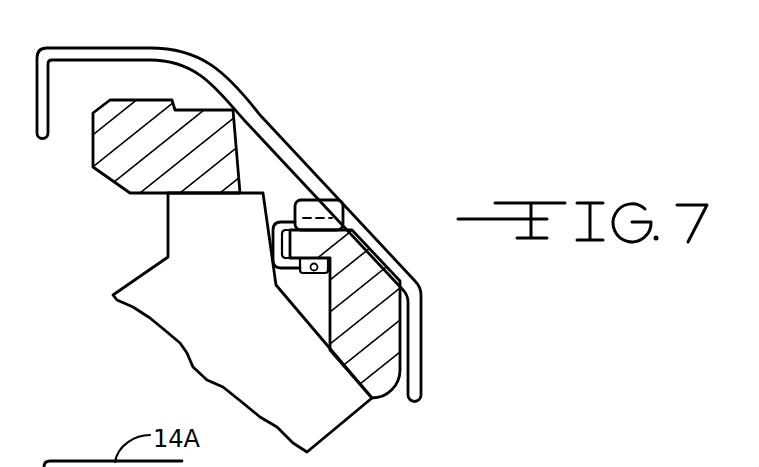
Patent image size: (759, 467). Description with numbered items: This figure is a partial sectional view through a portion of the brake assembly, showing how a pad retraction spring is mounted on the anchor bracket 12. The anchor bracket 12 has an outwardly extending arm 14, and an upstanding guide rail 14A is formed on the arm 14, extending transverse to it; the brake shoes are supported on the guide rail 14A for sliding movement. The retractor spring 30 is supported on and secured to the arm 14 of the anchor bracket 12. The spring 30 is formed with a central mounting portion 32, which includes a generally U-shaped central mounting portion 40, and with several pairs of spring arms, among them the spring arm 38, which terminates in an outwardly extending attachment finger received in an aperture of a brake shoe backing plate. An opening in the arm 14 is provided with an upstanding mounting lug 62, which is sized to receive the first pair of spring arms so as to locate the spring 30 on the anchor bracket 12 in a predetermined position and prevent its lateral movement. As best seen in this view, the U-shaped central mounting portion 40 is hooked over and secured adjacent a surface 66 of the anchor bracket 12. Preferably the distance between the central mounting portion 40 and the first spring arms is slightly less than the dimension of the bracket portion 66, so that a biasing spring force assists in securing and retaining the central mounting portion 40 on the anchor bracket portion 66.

The anchor bracket 12 is at (361, 429).
The arm 14 is at (375, 257).
The guide rail 14A is at (138, 100).
The retractor spring 30 is at (229, 211).
The central mounting portion 32 is at (240, 237).
The spring arm 38 is at (242, 74).
The U-shaped central mounting portion 40 is at (277, 284).
The mounting lug 62 is at (323, 197).
The surface of the anchor bracket 66 is at (300, 262).